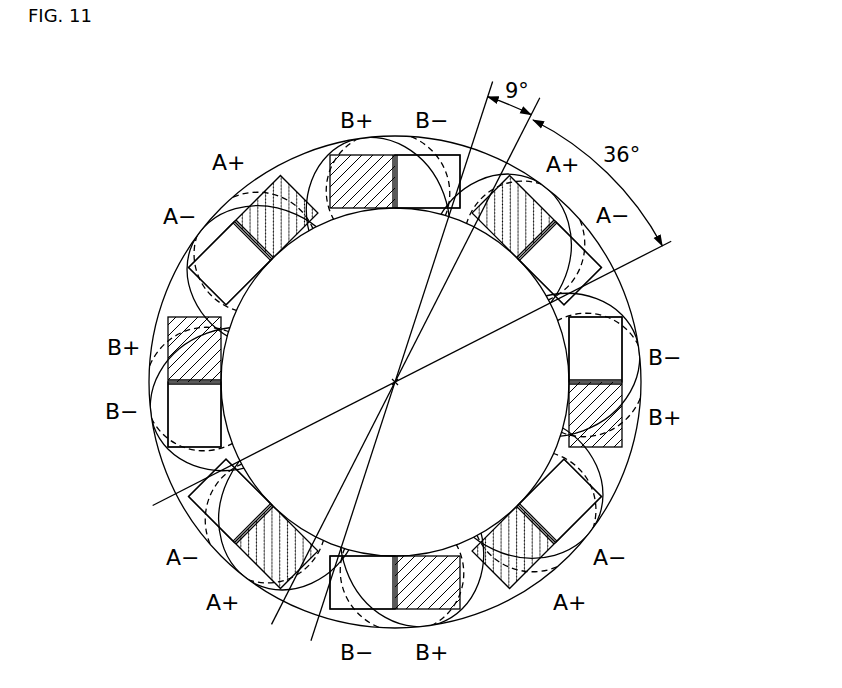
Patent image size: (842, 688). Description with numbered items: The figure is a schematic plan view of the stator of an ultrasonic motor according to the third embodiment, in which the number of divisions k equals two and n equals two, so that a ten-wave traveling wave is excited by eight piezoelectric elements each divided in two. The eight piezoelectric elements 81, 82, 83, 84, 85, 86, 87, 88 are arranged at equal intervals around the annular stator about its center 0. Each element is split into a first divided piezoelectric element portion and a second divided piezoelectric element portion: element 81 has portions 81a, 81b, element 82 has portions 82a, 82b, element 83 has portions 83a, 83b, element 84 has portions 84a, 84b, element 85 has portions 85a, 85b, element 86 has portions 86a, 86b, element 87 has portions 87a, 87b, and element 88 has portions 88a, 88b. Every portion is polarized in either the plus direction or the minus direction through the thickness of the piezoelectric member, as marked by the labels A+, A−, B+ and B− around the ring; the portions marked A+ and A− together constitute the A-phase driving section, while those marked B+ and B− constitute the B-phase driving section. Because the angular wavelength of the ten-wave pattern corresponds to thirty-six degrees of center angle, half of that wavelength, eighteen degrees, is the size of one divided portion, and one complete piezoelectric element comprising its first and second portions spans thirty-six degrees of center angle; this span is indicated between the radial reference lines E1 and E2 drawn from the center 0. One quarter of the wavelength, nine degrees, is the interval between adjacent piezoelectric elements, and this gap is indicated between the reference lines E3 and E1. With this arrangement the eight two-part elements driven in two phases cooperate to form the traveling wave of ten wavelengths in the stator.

The piezoelectric element 81 is at (480, 300).
The first divided piezoelectric element portion 81a is at (466, 240).
The second divided piezoelectric element portion 81b is at (524, 278).
The piezoelectric element 82 is at (495, 362).
The first divided piezoelectric element portion 82a is at (566, 362).
The second divided piezoelectric element portion 82b is at (566, 418).
The piezoelectric element 83 is at (478, 442).
The first divided piezoelectric element portion 83a is at (538, 482).
The second divided piezoelectric element portion 83b is at (508, 512).
The piezoelectric element 84 is at (448, 518).
The first divided piezoelectric element portion 84a is at (420, 554).
The second divided piezoelectric element portion 84b is at (363, 554).
The piezoelectric element 85 is at (310, 472).
The first divided piezoelectric element portion 85a is at (312, 500).
The second divided piezoelectric element portion 85b is at (260, 488).
The piezoelectric element 86 is at (294, 360).
The first divided piezoelectric element portion 86a is at (222, 420).
The second divided piezoelectric element portion 86b is at (222, 352).
The piezoelectric element 87 is at (320, 270).
The first divided piezoelectric element portion 87a is at (255, 282).
The second divided piezoelectric element portion 87b is at (300, 240).
The piezoelectric element 88 is at (436, 258).
The first divided piezoelectric element portion 88a is at (367, 210).
The second divided piezoelectric element portion 88b is at (411, 210).
The center of stator 0 is at (397, 386).
The reference line E1 is at (542, 104).
The reference line E2 is at (672, 246).
The reference line E3 is at (470, 93).